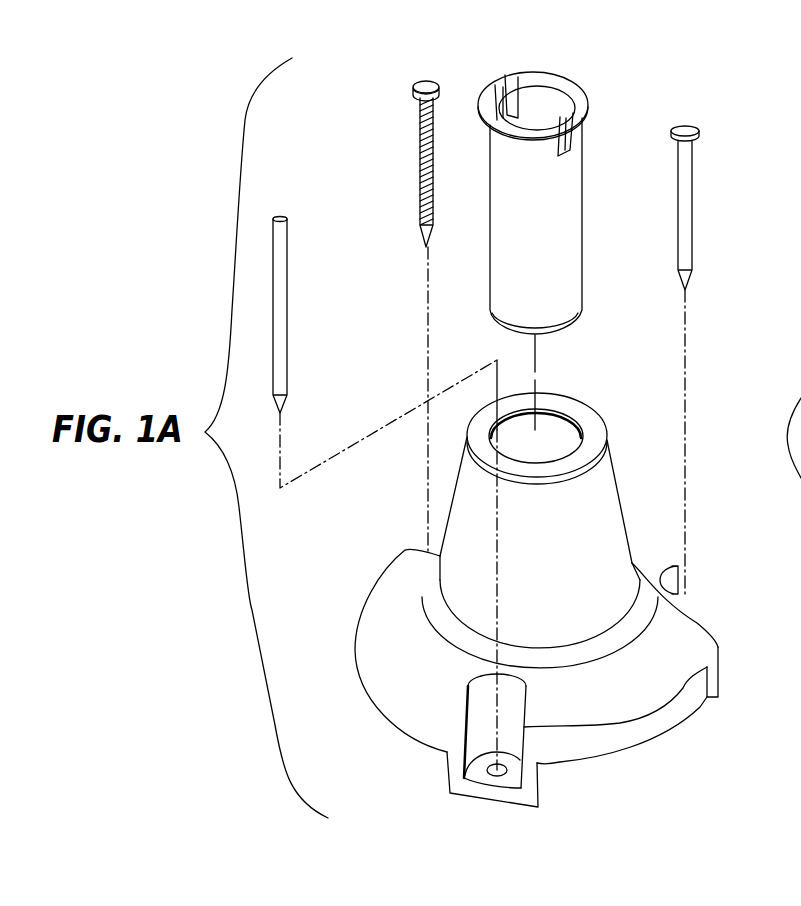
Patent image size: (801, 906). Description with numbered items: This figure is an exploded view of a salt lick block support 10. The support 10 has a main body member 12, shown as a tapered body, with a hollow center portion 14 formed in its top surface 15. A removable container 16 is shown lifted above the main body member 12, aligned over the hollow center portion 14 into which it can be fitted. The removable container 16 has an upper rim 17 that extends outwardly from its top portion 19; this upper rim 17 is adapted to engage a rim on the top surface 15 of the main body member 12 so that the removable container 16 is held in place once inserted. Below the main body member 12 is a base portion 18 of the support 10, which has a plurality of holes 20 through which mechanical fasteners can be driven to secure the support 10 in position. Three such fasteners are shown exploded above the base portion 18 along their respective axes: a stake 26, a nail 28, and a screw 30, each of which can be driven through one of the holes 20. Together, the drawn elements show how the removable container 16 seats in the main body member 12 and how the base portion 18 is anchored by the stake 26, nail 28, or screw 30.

The salt lick block support 10 is at (655, 483).
The main body member 12 is at (563, 505).
The hollow center portion 14 is at (560, 447).
The top surface 15 is at (592, 412).
The removable container 16 is at (573, 185).
The upper rim 17 is at (583, 86).
The base portion 18 is at (578, 705).
The top portion 19 is at (585, 127).
The holes 20 is at (718, 664).
The stakes 26 is at (287, 283).
The nails 28 is at (692, 230).
The screws 30 is at (420, 146).